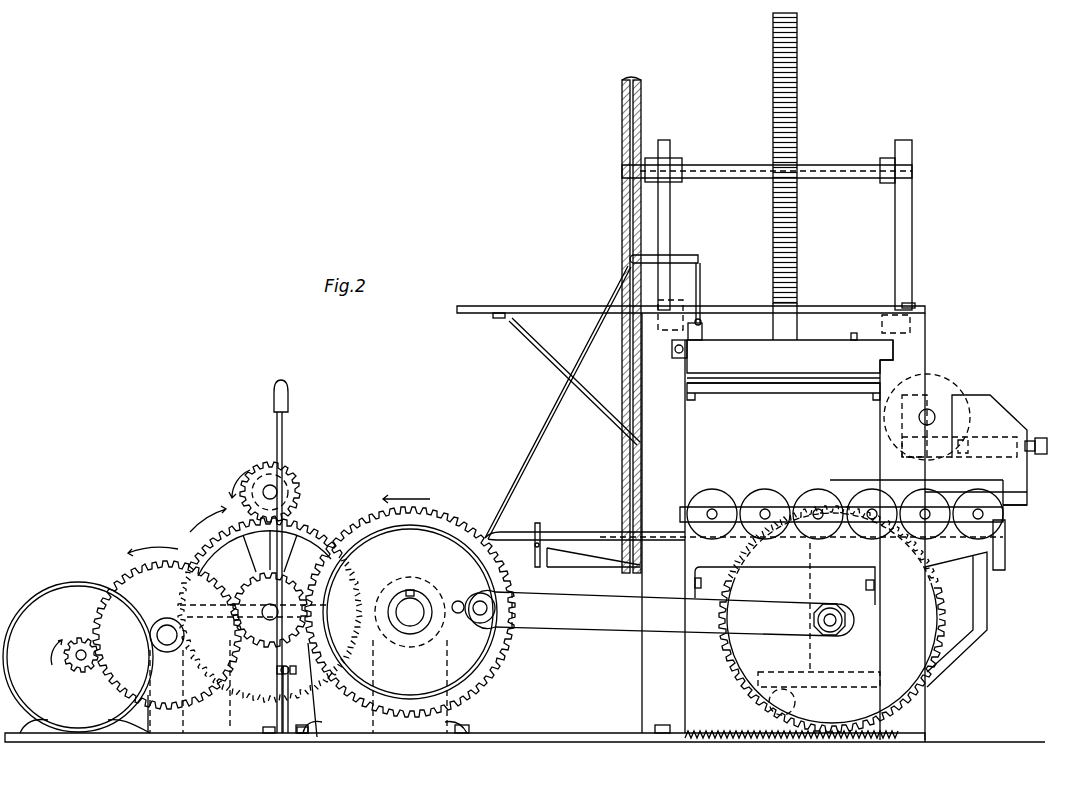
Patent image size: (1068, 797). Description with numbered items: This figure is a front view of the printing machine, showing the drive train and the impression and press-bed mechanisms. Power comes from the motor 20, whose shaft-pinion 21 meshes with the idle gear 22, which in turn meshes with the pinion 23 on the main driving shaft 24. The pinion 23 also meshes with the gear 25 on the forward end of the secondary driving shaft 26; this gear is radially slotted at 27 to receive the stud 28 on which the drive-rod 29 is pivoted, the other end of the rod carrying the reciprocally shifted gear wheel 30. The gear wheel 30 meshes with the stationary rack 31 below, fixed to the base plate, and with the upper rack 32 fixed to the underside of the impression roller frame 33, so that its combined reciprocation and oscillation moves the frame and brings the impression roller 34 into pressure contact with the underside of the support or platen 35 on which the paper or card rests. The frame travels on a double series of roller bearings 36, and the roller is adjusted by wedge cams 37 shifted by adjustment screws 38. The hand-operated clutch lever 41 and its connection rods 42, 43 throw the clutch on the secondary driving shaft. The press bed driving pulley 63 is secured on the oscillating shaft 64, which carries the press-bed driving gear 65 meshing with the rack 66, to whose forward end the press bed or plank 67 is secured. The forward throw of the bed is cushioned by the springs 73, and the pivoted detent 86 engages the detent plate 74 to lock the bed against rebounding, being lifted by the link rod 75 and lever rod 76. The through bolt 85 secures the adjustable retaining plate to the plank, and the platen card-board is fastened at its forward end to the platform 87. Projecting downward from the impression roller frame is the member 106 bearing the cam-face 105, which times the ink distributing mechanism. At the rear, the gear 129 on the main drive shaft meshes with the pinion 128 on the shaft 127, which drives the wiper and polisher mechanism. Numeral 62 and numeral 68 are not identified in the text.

The motor 20 is at (58, 582).
The shaft-pinion 21 is at (80, 637).
The idle gear 22 is at (167, 635).
The pinion 23 is at (258, 592).
The main driving shaft 24 is at (268, 622).
The gear 25 is at (363, 505).
The secondary driving shaft 26 is at (413, 627).
The radial slot 27 is at (456, 600).
The stud 28 is at (496, 604).
The drive-rod 29 is at (661, 614).
The gear wheel 30 is at (735, 660).
The stationary rack 31 is at (768, 740).
The upper rack 32 is at (1020, 510).
The impression roller frame 33 is at (953, 450).
The impression roller 34 is at (955, 392).
The support or platen 35 is at (785, 385).
The roller bearings 36 is at (783, 492).
The wedge cams 37 is at (940, 432).
The adjustment screws 38 is at (1044, 437).
The hand-operated clutch lever 41 is at (290, 397).
The connection rod 42 is at (285, 740).
The connection rod 43 is at (265, 735).
The platform 62 is at (628, 284).
The press bed driving pulley 63 is at (645, 80).
The oscillating shaft 64 is at (712, 163).
The press-bed driving gear 65 is at (800, 122).
The rack 66 is at (799, 336).
The press bed or plank 67 is at (790, 356).
The bracket 68 is at (672, 348).
The springs 73 is at (688, 352).
The detent plate 74 is at (704, 330).
The link rod 75 is at (703, 280).
The lever rod 76 is at (684, 252).
The through bolt 85 is at (855, 333).
The pivoted detent 86 is at (703, 320).
The platform 87 is at (737, 394).
The cam-face 105 is at (943, 660).
The member 106 is at (836, 633).
The shaft 127 is at (263, 489).
The pinion 128 is at (290, 470).
The gear 129 is at (310, 522).